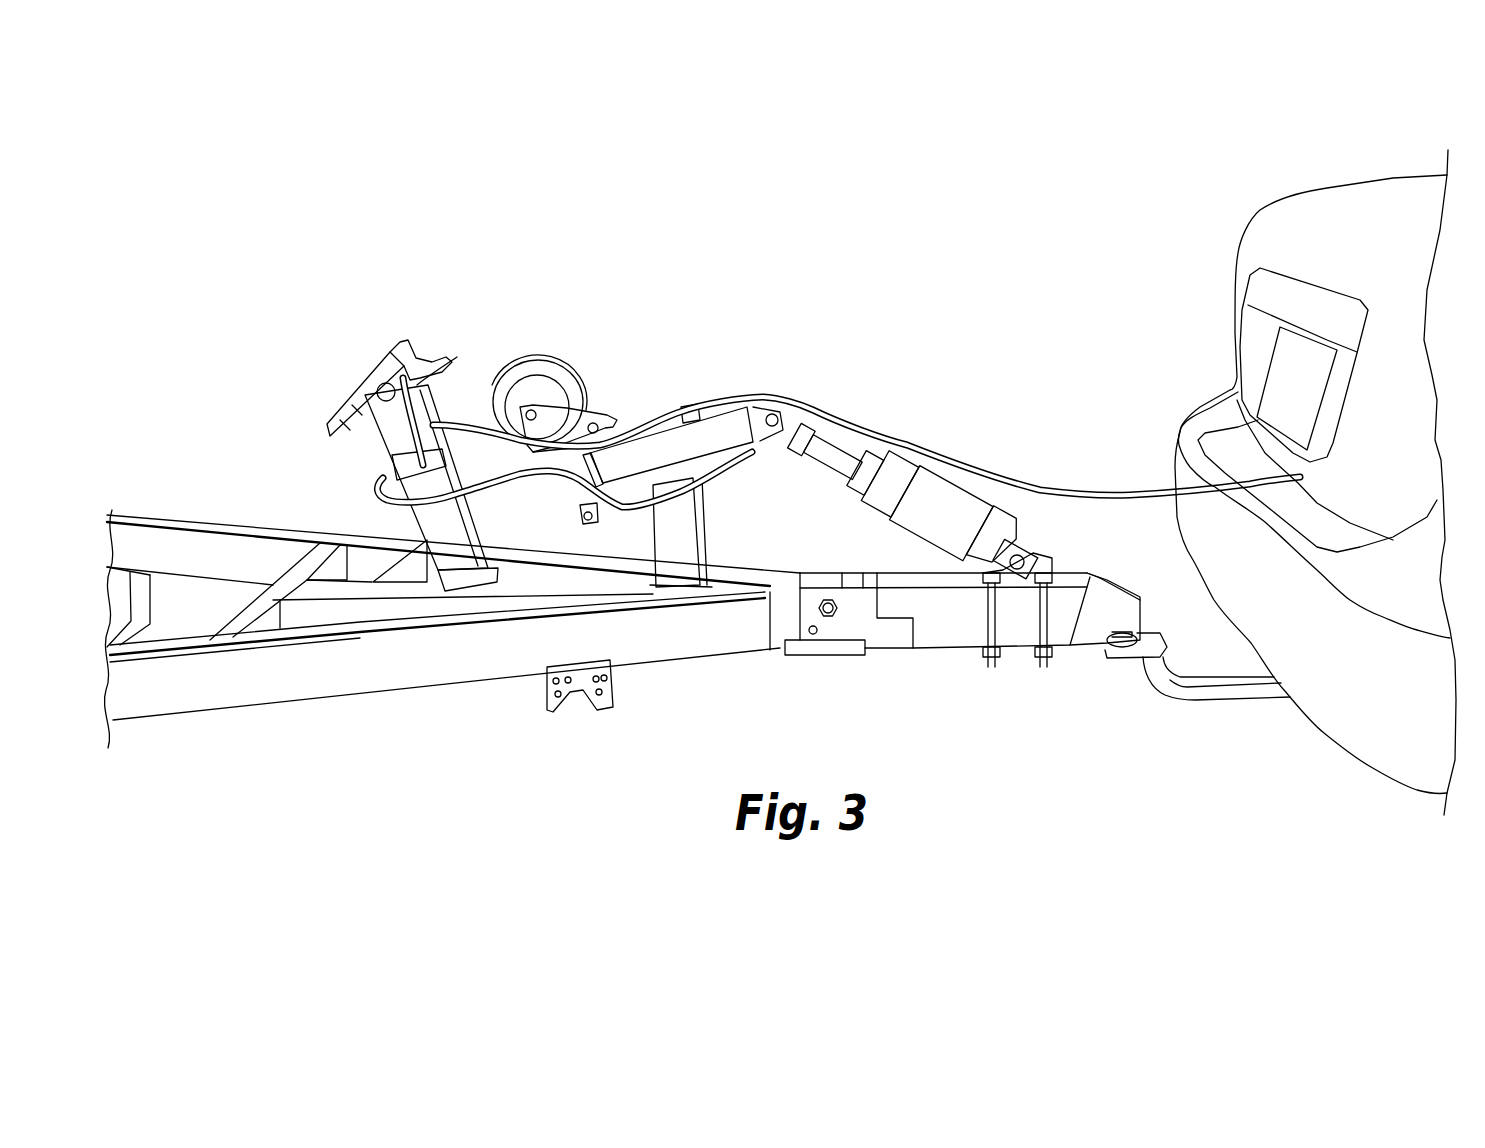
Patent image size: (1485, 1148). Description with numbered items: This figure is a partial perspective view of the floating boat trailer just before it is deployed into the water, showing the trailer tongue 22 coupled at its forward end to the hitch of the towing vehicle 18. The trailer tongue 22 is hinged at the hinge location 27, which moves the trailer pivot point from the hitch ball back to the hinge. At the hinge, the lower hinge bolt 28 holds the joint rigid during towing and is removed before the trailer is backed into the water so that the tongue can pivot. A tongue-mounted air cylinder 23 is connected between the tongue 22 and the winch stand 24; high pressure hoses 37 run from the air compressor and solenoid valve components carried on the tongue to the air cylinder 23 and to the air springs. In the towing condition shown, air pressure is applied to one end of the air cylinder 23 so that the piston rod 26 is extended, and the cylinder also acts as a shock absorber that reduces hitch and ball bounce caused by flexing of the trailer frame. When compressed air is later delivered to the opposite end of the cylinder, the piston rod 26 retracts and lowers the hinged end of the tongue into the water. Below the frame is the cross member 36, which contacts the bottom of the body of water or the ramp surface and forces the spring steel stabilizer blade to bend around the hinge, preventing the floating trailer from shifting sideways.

The towing vehicle 18 is at (1232, 314).
The trailer tongue 22 is at (967, 652).
The air cylinder 23 is at (932, 500).
The winch stand 24 is at (742, 400).
The piston rod 26 is at (828, 443).
The hinge location 27 is at (822, 566).
The lower hinge bolt 28 is at (817, 627).
The cross member 36 is at (545, 700).
The high pressure hoses 37 is at (1057, 490).